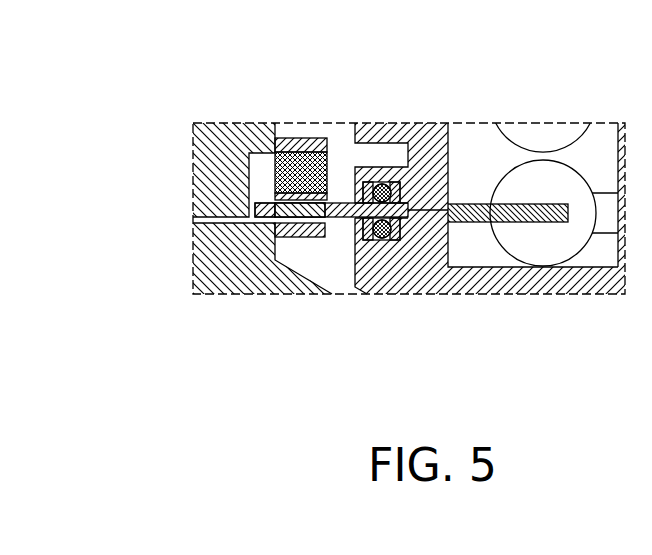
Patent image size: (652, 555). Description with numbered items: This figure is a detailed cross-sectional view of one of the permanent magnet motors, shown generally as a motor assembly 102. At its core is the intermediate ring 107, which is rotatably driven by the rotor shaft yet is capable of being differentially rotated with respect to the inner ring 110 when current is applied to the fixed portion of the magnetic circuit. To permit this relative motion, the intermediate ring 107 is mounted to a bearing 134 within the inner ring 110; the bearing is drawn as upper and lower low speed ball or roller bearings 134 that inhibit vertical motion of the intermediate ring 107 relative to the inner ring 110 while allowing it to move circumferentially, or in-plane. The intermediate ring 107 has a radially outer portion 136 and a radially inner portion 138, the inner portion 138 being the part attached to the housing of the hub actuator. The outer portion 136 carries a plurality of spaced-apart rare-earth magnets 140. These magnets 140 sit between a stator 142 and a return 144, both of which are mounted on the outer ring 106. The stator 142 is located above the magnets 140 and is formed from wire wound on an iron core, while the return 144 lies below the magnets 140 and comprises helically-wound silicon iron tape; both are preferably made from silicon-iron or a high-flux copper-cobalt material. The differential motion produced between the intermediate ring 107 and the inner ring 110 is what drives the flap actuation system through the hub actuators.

The drive assembly 102 is at (192, 193).
The outer ring 106 is at (193, 147).
The intermediate ring 107 is at (338, 217).
The inner ring 110 is at (425, 137).
The bearing 134 is at (372, 182).
The radially outer portion 136 is at (267, 200).
The radially inner portion 138 is at (543, 222).
The rare-earth magnets 140 is at (303, 212).
The stator 142 is at (302, 140).
The return 144 is at (282, 237).